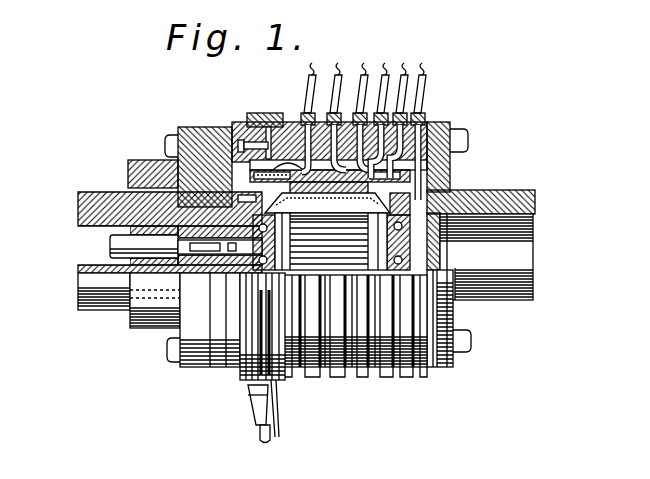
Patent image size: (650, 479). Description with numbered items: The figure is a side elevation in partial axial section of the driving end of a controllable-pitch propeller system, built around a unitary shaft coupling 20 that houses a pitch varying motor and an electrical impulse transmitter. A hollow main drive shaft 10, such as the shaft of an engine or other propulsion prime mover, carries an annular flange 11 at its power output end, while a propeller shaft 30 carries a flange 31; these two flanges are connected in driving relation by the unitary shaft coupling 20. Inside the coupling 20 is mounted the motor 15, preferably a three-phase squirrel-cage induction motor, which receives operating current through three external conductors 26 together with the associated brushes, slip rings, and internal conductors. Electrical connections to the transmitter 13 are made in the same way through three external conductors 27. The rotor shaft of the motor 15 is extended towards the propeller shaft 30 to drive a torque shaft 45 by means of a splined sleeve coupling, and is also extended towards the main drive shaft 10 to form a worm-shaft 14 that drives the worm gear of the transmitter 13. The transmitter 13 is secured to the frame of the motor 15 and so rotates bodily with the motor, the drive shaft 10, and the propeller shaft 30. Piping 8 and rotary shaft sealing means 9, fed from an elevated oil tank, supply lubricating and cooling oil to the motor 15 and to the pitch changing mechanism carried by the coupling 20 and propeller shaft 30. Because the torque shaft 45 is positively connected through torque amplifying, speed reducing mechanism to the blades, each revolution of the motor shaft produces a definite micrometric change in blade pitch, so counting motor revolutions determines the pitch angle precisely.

The piping 8 is at (260, 437).
The rotary shaft sealing means 9 is at (256, 118).
The hollow main drive shaft 10 is at (510, 192).
The annular flange 11 is at (457, 319).
The electrical impulse transmitter 13 is at (446, 249).
The worm-shaft 14 is at (410, 243).
The pitch changing motor 15 is at (303, 238).
The unitary shaft coupling 20 is at (369, 385).
The external conductors 26 is at (372, 73).
The external conductors 27 is at (433, 73).
The propeller shaft 30 is at (102, 296).
The flange 31 is at (192, 363).
The torque shaft 45 is at (117, 244).